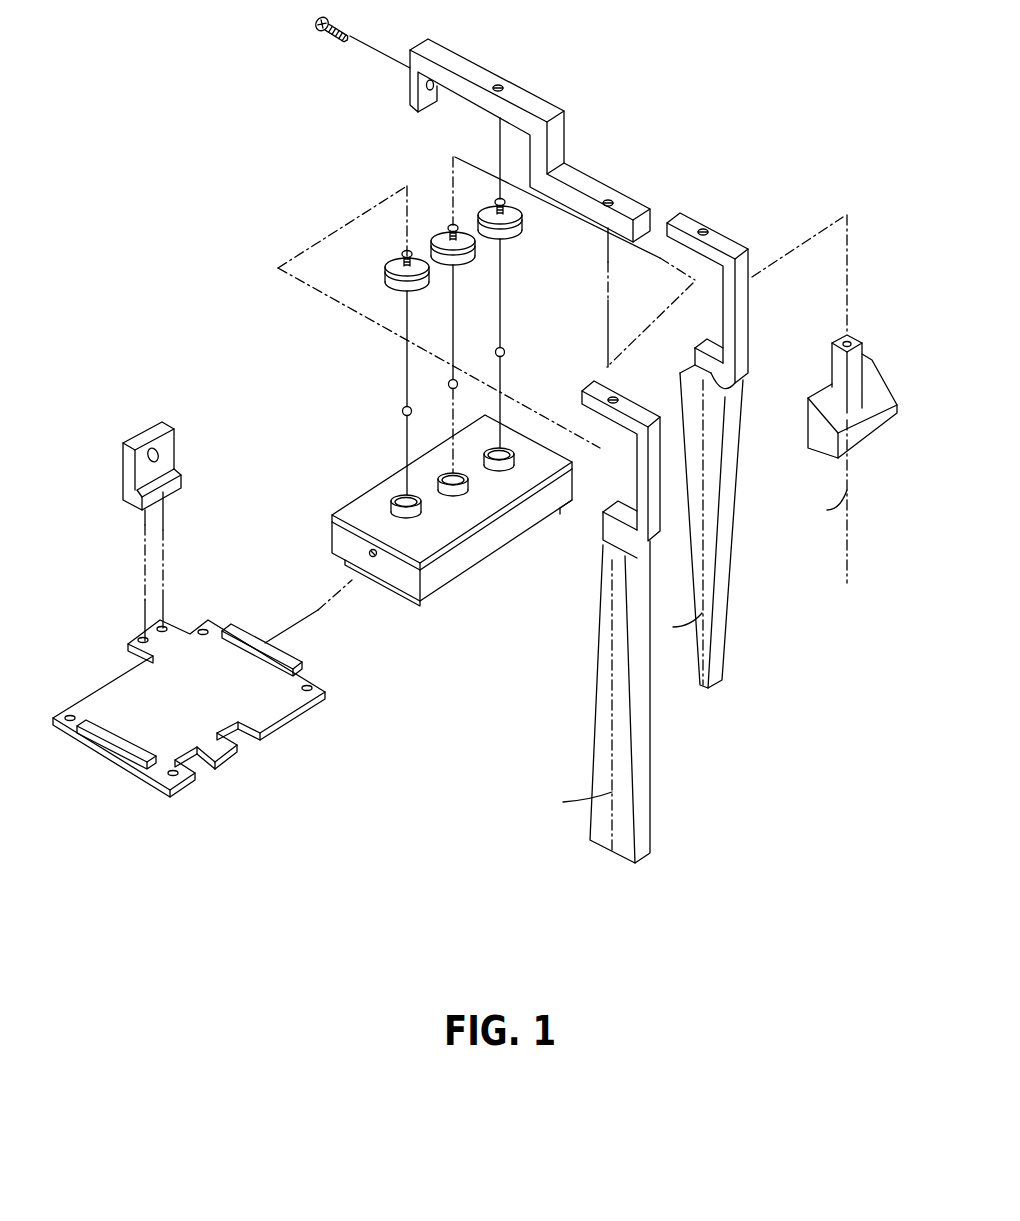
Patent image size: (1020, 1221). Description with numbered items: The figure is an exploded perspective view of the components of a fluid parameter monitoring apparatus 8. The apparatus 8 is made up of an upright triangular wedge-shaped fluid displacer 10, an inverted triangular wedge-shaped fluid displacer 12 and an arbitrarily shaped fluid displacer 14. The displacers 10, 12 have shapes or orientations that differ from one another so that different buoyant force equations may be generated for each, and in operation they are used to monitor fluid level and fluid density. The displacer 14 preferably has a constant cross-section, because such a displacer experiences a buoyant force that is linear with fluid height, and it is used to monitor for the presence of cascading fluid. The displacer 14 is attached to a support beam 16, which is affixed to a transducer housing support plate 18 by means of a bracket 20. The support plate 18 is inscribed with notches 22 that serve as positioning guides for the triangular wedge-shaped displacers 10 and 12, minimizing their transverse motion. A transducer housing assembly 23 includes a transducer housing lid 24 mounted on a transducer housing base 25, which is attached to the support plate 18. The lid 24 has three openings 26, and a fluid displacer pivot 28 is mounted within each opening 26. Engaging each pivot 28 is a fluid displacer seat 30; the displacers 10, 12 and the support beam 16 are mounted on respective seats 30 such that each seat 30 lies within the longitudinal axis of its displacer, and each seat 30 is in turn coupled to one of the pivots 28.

The fluid parameter monitoring apparatus 8 is at (218, 168).
The upright triangular wedge-shaped fluid displacer 10 is at (628, 862).
The inverted triangular wedge-shaped fluid displacer 12 is at (712, 686).
The arbitrarily shaped fluid displacer 14 is at (872, 445).
The support beam 16 is at (447, 60).
The transducer housing support plate 18 is at (175, 720).
The bracket 20 is at (138, 440).
The notches 22 is at (238, 737).
The transducer housing assembly 23 is at (386, 472).
The transducer housing lid 24 is at (457, 529).
The transducer housing base 25 is at (450, 562).
The openings 26 is at (397, 506).
The fluid displacer pivot 28 is at (505, 350).
The fluid displacer seat 30 is at (452, 227).